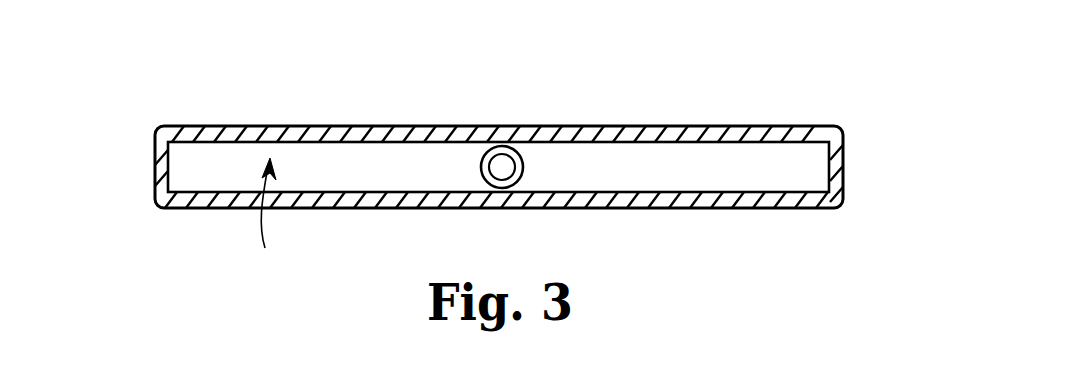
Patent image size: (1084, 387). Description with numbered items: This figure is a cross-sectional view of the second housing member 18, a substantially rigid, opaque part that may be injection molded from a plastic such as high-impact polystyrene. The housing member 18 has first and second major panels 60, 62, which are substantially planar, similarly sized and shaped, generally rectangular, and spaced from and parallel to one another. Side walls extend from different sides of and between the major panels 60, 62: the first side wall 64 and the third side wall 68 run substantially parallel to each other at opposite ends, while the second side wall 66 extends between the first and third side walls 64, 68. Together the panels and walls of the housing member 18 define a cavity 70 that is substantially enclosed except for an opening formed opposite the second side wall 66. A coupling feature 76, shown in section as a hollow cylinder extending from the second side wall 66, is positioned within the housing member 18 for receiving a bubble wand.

The second housing member 18 is at (785, 76).
The first major panel 60 is at (679, 206).
The second major panel 62 is at (650, 128).
The first side wall 64 is at (160, 162).
The second side wall 66 is at (724, 176).
The third side wall 68 is at (838, 163).
The cavity 70 is at (260, 218).
The coupling feature 76 is at (522, 155).